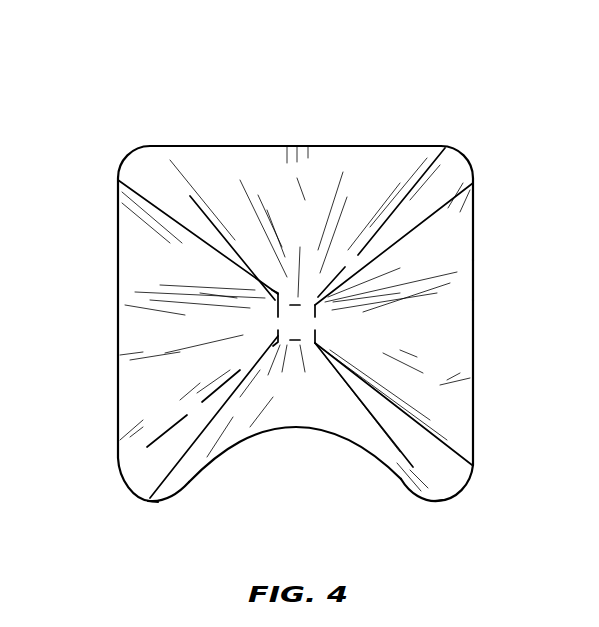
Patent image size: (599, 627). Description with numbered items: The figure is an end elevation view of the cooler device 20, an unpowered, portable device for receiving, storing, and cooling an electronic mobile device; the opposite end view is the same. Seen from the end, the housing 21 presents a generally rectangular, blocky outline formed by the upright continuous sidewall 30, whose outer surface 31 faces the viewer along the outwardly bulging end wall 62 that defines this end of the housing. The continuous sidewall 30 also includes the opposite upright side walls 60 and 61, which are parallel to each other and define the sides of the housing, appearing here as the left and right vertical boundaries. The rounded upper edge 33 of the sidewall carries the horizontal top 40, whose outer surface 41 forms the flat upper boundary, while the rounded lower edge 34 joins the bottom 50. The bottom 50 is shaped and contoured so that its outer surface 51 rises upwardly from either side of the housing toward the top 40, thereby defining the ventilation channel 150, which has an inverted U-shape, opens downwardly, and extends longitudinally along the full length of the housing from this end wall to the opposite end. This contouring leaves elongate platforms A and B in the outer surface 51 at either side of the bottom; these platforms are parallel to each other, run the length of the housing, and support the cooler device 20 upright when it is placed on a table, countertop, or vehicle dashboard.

The cooler device 20 is at (473, 78).
The housing 21 is at (478, 184).
The continuous sidewall 30 is at (475, 242).
The outer surface 31 is at (475, 268).
The upper edge 33 is at (462, 150).
The lower edge 34 is at (474, 466).
The top 40 is at (322, 146).
The outer surface 41 is at (240, 146).
The bottom 50 is at (148, 501).
The outer surface 51 is at (190, 492).
The side wall 60 is at (475, 322).
The side wall 61 is at (118, 325).
The end wall 62 is at (280, 291).
The ventilation channel 150 is at (318, 479).
The platform A is at (156, 502).
The platform B is at (439, 502).